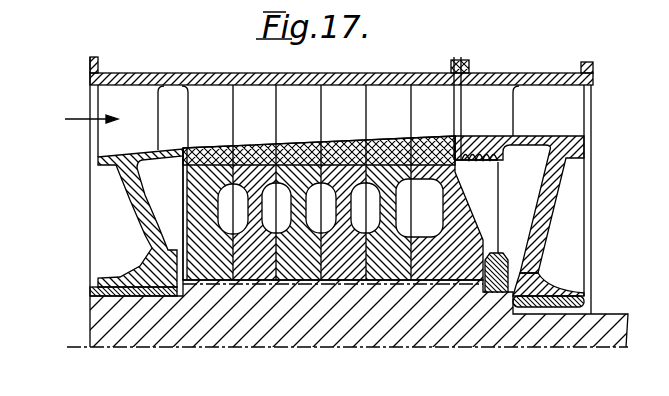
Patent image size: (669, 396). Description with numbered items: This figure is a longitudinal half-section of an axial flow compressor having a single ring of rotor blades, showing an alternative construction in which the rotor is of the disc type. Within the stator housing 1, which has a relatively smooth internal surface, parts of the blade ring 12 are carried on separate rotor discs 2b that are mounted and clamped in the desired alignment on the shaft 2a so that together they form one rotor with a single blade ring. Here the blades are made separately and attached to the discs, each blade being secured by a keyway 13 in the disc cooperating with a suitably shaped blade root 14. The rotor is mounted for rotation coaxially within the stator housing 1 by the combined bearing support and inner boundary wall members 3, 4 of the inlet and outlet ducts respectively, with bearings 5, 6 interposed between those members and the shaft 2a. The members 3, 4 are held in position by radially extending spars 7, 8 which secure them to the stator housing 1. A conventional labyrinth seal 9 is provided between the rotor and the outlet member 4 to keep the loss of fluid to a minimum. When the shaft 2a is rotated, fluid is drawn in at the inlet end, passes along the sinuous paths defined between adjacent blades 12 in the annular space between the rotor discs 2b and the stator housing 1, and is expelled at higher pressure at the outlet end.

The stator housing 1 is at (190, 73).
The shaft 2a is at (225, 349).
The rotor discs 2b is at (258, 265).
The combined bearing support and inner boundary wall member 3 is at (135, 210).
The combined bearing support and inner boundary wall member 4 is at (553, 215).
The bearing 5 is at (105, 285).
The bearing 6 is at (568, 300).
The spar 7 is at (132, 98).
The spar 8 is at (541, 107).
The labyrinth seal 9 is at (496, 152).
The blades 12 is at (256, 98).
The keyway 13 is at (205, 168).
The blade root 14 is at (210, 155).